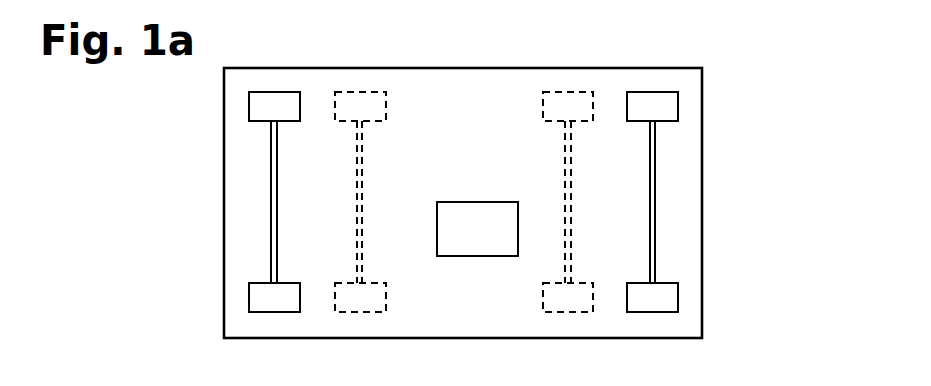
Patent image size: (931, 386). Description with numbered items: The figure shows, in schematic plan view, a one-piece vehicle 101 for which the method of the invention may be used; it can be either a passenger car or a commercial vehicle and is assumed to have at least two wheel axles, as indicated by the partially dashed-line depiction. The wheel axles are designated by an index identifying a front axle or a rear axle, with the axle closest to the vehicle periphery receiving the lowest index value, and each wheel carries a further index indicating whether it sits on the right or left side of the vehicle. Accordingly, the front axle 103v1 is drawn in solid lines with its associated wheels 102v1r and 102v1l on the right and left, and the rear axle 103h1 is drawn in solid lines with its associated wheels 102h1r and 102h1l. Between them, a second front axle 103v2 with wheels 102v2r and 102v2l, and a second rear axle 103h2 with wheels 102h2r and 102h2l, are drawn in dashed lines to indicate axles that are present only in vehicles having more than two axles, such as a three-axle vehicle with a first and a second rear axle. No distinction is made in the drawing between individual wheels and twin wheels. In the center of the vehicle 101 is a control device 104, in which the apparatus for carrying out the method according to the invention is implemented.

The one-piece vehicle 101 is at (695, 242).
The control device 104 is at (460, 252).
The wheel 102v1r is at (273, 102).
The wheel 102v1l is at (272, 304).
The wheel 102v2r is at (358, 100).
The wheel 102v2l is at (355, 311).
The wheel 102h2r is at (572, 104).
The wheel 102h2l is at (568, 312).
The wheel 102h1r is at (655, 102).
The wheel 102h1l is at (655, 306).
The front axle 103v1 is at (303, 183).
The second front axle 103v2 is at (390, 186).
The second rear axle 103h2 is at (565, 188).
The rear axle 103h1 is at (652, 188).